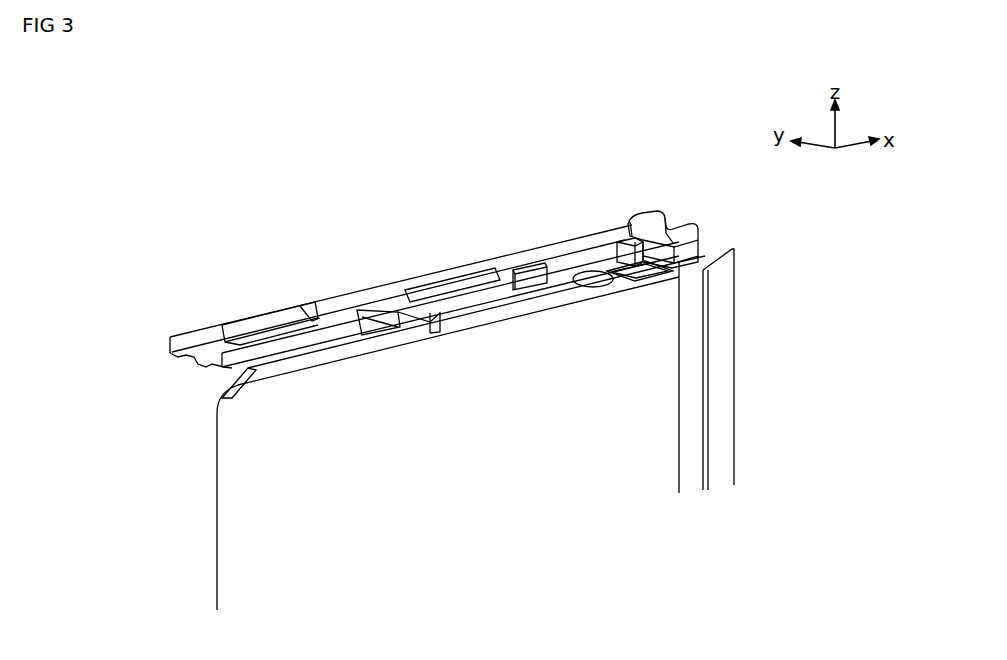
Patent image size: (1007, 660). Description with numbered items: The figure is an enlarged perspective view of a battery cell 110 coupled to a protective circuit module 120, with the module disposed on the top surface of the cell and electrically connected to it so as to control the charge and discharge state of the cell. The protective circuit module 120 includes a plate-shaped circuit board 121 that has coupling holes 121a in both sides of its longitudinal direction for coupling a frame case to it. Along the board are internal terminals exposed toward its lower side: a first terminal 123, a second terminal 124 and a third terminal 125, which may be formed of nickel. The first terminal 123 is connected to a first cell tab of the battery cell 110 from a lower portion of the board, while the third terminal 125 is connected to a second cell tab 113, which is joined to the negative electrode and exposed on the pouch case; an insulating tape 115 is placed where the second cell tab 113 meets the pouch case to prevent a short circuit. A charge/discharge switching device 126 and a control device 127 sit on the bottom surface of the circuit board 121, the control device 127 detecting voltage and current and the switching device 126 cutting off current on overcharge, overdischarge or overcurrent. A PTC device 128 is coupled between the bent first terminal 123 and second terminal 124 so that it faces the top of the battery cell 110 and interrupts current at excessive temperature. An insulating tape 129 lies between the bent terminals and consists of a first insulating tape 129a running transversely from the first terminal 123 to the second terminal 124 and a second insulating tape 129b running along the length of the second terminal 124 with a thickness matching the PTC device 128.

The battery cell 110 is at (750, 373).
The protective circuit module 120 is at (487, 269).
The circuit board 121 is at (172, 357).
The coupling holes 121a is at (672, 232).
The second cell tab 113 is at (360, 317).
The insulating tape 115 is at (388, 312).
The first terminal 123 is at (530, 275).
The second terminal 124 is at (622, 250).
The third terminal 125 is at (310, 323).
The charge/discharge switching device 126 is at (453, 288).
The control device 127 is at (248, 348).
The PTC device 128 is at (573, 275).
The insulating tape 129 is at (755, 248).
The first insulating tape 129a is at (661, 250).
The second insulating tape 129b is at (672, 263).